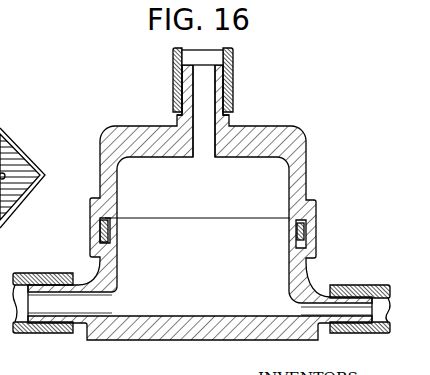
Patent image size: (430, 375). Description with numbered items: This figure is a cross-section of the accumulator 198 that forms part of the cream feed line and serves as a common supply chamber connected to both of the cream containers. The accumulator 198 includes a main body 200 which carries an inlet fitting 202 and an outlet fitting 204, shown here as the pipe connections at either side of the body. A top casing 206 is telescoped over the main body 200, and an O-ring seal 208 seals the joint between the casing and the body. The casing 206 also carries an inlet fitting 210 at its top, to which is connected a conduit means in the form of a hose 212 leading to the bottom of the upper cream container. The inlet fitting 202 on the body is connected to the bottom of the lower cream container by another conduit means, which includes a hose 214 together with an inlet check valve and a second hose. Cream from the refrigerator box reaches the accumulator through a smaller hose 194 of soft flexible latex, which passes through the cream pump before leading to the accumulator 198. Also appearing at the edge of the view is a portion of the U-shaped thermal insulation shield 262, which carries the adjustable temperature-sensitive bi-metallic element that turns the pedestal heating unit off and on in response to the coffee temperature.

The accumulator 198 is at (196, 208).
The smaller hose 194 is at (19, 273).
The main body 200 is at (167, 332).
The inlet fitting 202 is at (328, 333).
The outlet fitting 204 is at (63, 333).
The top casing 206 is at (145, 138).
The O-ring seal 208 is at (106, 234).
The inlet fitting 210 is at (175, 90).
The hose 212 is at (234, 58).
The hose 214 is at (381, 285).
The U-shaped thermal insulation shield 262 is at (2, 128).